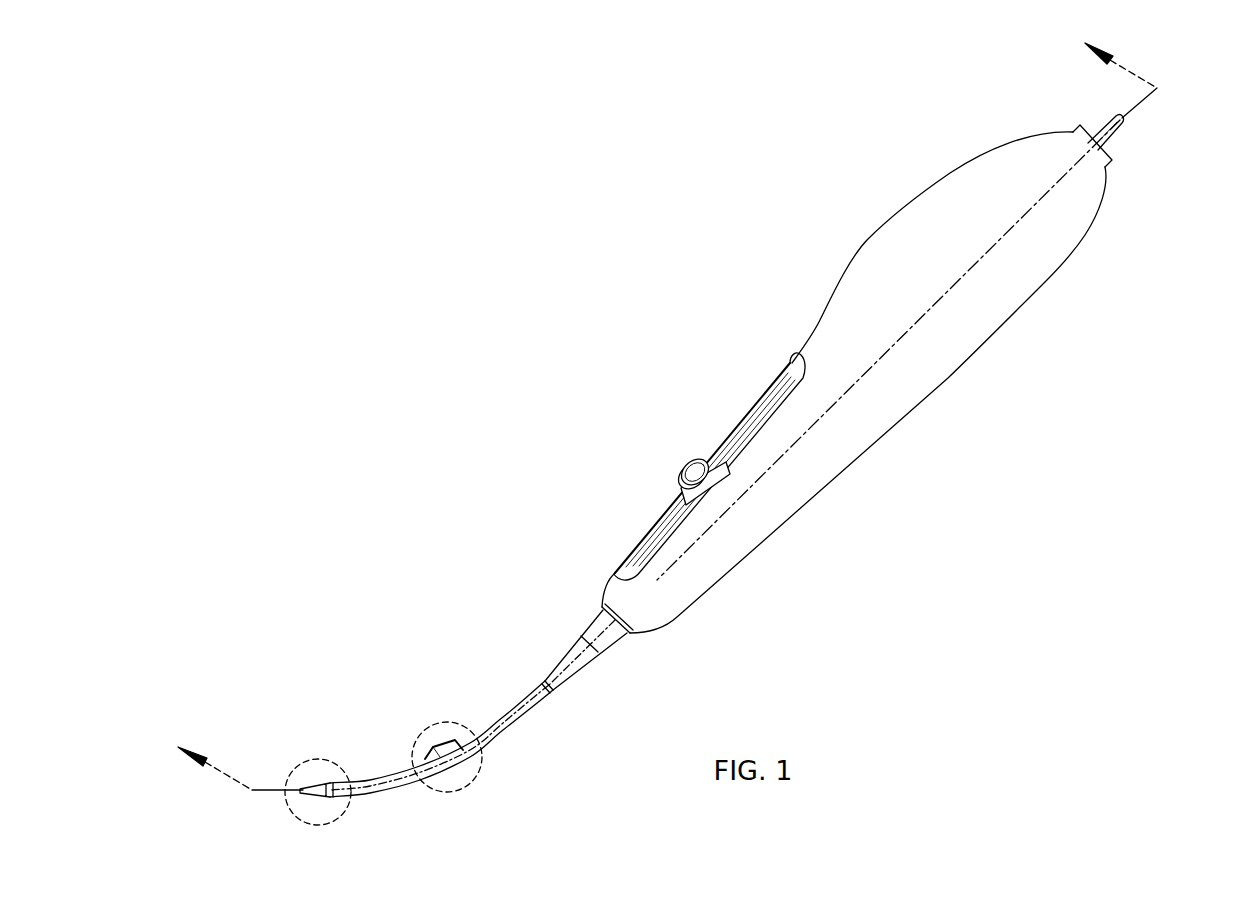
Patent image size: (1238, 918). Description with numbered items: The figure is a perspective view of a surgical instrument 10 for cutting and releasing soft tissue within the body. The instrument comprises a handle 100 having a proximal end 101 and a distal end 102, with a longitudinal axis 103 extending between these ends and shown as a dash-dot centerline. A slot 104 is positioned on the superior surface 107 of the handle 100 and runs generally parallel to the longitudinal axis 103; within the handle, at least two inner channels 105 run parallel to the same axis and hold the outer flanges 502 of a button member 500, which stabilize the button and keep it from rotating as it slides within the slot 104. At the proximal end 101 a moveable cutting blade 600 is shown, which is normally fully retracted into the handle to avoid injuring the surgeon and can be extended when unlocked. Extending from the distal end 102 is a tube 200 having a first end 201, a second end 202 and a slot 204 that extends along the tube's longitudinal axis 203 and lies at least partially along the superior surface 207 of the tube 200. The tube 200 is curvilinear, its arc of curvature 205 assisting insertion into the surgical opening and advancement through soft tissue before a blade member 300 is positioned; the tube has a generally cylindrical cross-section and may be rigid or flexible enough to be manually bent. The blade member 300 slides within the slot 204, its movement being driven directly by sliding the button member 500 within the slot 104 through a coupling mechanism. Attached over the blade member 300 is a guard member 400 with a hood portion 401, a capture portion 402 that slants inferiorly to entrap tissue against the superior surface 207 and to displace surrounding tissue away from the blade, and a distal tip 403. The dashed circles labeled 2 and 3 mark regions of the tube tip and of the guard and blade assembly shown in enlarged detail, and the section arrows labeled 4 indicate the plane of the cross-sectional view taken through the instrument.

The surgical instrument 10 is at (470, 266).
The handle 100 is at (1057, 268).
The proximal end 101 is at (1103, 177).
The distal end 102 is at (625, 635).
The longitudinal axis 103 is at (1010, 223).
The slot 104 is at (792, 373).
The inner channels 105 is at (747, 440).
The superior surface 107 is at (833, 330).
The tube 200 is at (403, 787).
The first end 201 is at (313, 797).
The second end 202 is at (593, 632).
The longitudinal axis 203 is at (303, 790).
The slot 204 is at (497, 723).
The arc of curvature 205 is at (392, 757).
The superior surface 207 is at (370, 780).
The blade member 300 is at (477, 773).
The guard member 400 is at (448, 745).
The hood portion 401 is at (460, 747).
The capture portion 402 is at (433, 760).
The distal tip 403 is at (460, 790).
The button member 500 is at (682, 464).
The outer flanges 502 is at (694, 507).
The cutting blade 600 is at (1120, 124).
The detail view 2 region 2 is at (323, 760).
The detail view 3 region 3 is at (467, 787).
The section line 4 is at (667, 406).